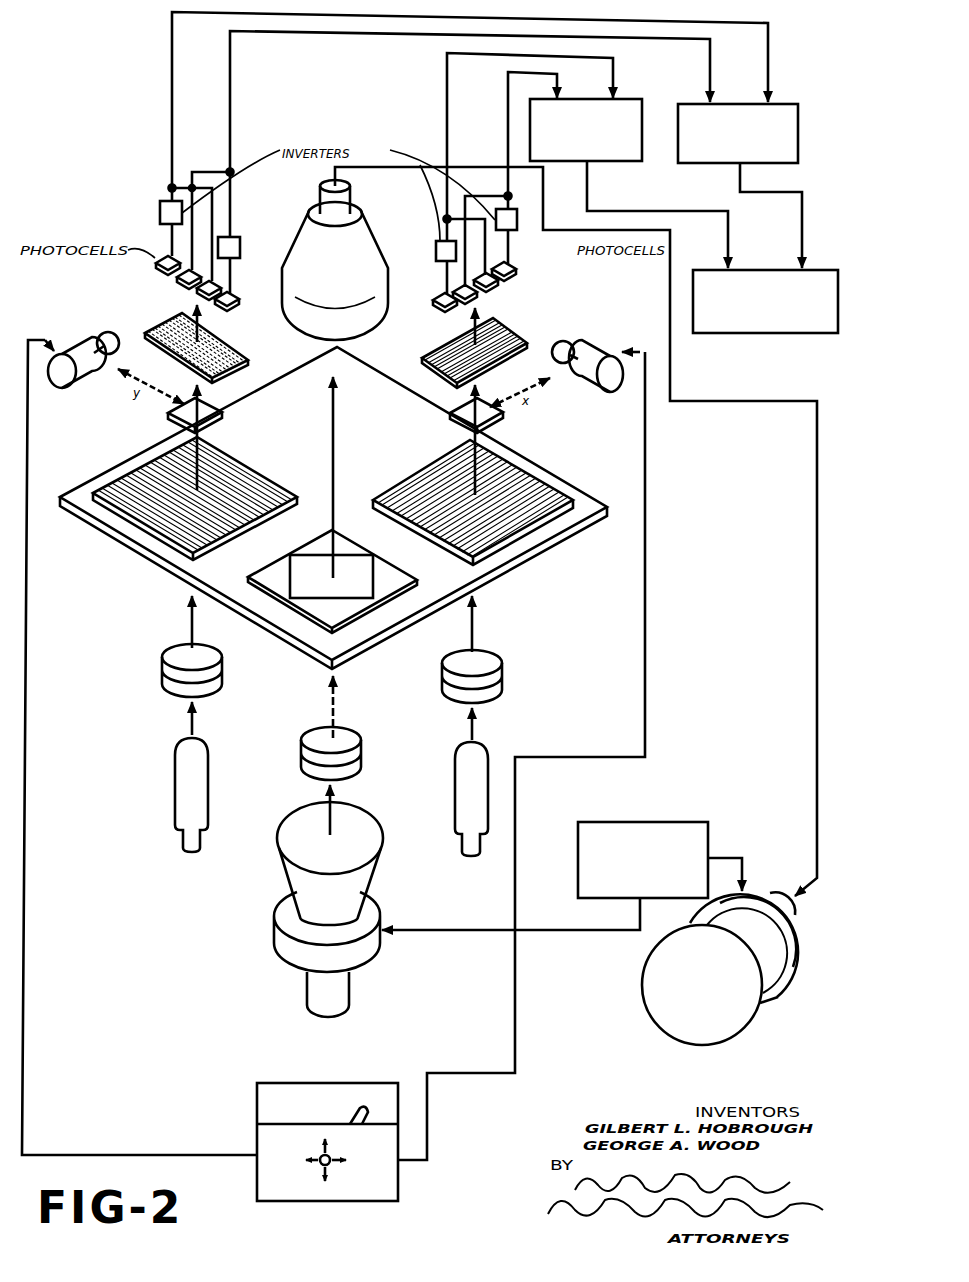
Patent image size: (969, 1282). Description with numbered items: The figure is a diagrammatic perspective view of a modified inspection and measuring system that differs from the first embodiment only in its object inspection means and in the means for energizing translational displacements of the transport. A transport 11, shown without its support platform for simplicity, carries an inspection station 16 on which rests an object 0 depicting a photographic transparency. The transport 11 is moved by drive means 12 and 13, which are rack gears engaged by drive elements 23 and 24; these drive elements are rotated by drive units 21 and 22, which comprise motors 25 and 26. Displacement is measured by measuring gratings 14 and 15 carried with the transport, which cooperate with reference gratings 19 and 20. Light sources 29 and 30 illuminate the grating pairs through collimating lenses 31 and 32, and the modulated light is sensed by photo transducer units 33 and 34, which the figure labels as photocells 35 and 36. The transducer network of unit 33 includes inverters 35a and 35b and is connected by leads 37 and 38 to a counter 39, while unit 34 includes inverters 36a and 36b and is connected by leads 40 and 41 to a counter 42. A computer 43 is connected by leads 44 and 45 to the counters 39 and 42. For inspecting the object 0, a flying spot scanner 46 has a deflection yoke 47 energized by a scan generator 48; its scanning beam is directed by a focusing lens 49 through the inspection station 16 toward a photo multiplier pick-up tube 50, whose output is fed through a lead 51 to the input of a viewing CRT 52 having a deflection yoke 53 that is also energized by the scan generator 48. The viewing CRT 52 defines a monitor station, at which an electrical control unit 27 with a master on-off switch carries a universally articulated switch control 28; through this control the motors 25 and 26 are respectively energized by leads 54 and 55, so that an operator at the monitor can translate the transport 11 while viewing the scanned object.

The object 0 is at (372, 575).
The transport 11 is at (568, 518).
The drive means 12 is at (502, 433).
The drive means 13 is at (172, 422).
The measuring grating 14 is at (545, 477).
The measuring grating 15 is at (125, 475).
The inspection station 16 is at (395, 582).
The reference grating 19 is at (500, 325).
The reference grating 20 is at (247, 350).
The drive unit 21 is at (605, 350).
The drive unit 22 is at (80, 390).
The drive element 23 is at (565, 341).
The drive element 24 is at (110, 332).
The motor 25 is at (606, 393).
The motor 26 is at (62, 338).
The electrical control unit 27 is at (392, 1198).
The universally articulated switch control 28 is at (320, 1170).
The light source 29 is at (458, 806).
The light source 30 is at (175, 800).
The collimating lens 31 is at (500, 666).
The collimating lens 32 is at (166, 656).
The photo transducer unit 33 is at (502, 275).
The photo transducer unit 34 is at (181, 263).
The photocell 35 is at (518, 272).
The photocell 36 is at (163, 272).
The inverter 35a is at (517, 219).
The inverter 35b is at (436, 260).
The inverter 36a is at (236, 237).
The inverter 36b is at (160, 212).
The lead 37 is at (508, 120).
The lead 38 is at (447, 122).
The counter 39 is at (614, 161).
The lead 40 is at (230, 125).
The lead 41 is at (172, 88).
The counter 42 is at (795, 163).
The computer 43 is at (757, 333).
The lead 44 is at (802, 222).
The lead 45 is at (728, 222).
The flying spot scanner 46 is at (287, 873).
The deflection yoke 47 is at (283, 945).
The scan generator 48 is at (678, 822).
The focusing lens 49 is at (360, 752).
The photo multiplier pick-up tube 50 is at (376, 256).
The lead 51 is at (817, 637).
The viewing CRT 52 is at (742, 1025).
The deflection yoke 53 is at (790, 965).
The lead 54 is at (513, 998).
The lead 55 is at (25, 963).